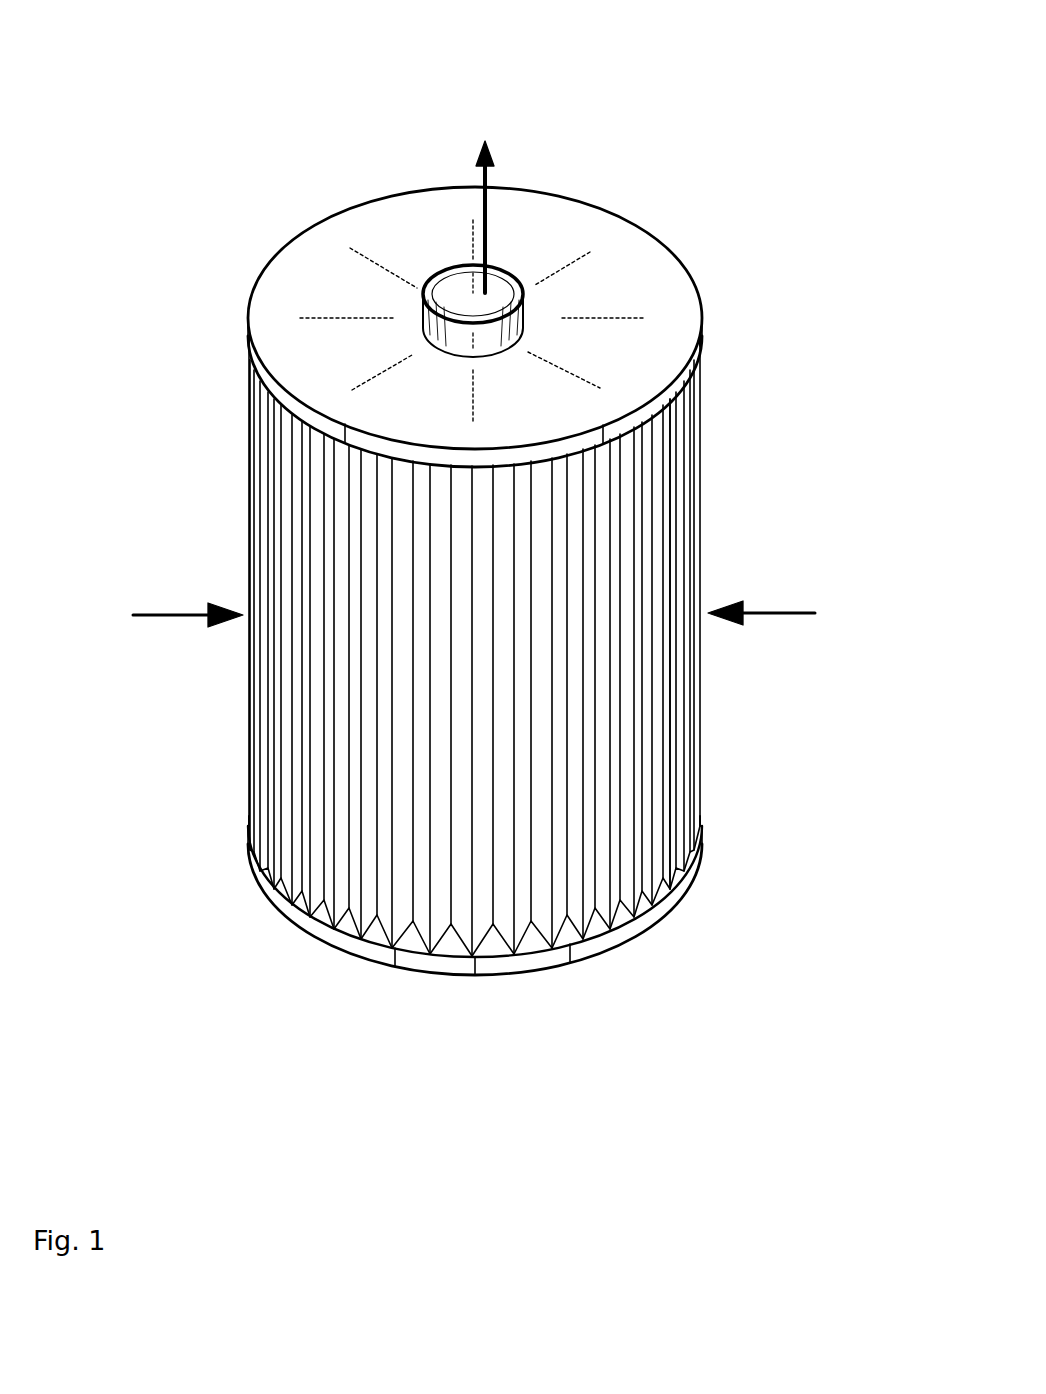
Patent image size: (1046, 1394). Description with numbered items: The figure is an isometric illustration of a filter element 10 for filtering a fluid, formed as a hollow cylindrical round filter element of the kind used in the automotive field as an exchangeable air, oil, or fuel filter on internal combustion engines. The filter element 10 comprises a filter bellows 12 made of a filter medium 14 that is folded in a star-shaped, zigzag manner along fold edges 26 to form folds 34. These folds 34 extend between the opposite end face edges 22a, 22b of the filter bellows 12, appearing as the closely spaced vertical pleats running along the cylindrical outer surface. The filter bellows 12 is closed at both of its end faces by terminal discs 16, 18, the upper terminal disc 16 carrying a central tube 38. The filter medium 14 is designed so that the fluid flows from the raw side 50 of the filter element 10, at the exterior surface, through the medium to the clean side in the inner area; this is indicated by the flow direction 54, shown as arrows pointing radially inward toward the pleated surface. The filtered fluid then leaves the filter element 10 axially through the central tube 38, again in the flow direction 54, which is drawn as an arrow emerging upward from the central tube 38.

The filter element 10 is at (648, 116).
The filter bellows 12 is at (466, 618).
The filter medium 14 is at (690, 497).
The terminal disc 16 is at (702, 297).
The terminal disc 18 is at (297, 908).
The end face edge 22a is at (253, 387).
The end face edge 22b is at (250, 868).
The fold edges 26 is at (673, 737).
The folds 34 is at (752, 640).
The central tube 38 is at (508, 270).
The raw side 50 is at (187, 481).
The flow direction 54 is at (469, 378).